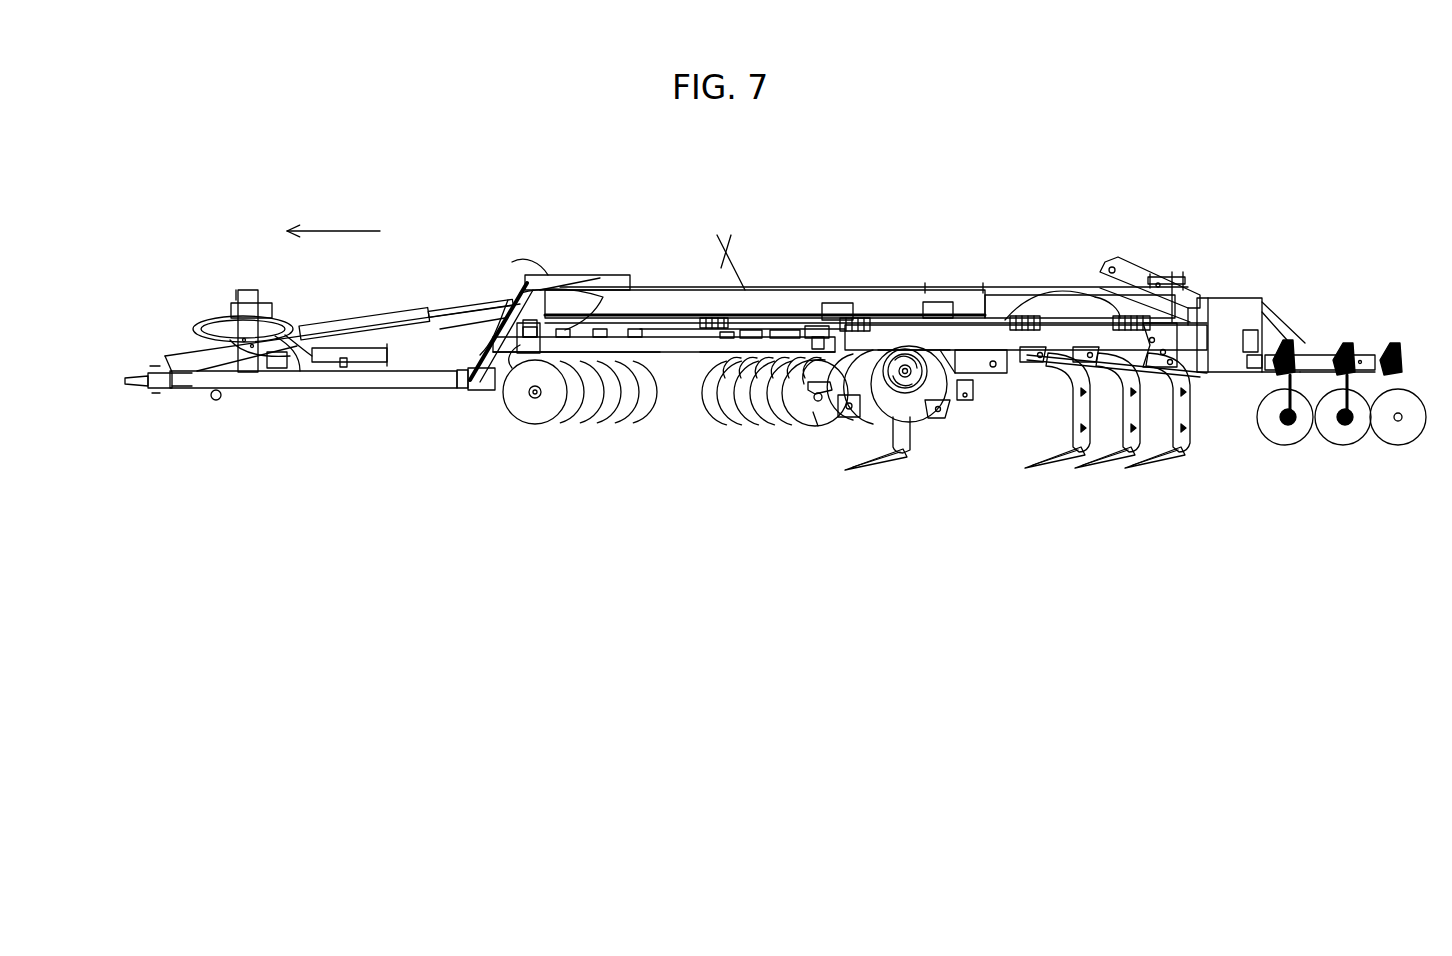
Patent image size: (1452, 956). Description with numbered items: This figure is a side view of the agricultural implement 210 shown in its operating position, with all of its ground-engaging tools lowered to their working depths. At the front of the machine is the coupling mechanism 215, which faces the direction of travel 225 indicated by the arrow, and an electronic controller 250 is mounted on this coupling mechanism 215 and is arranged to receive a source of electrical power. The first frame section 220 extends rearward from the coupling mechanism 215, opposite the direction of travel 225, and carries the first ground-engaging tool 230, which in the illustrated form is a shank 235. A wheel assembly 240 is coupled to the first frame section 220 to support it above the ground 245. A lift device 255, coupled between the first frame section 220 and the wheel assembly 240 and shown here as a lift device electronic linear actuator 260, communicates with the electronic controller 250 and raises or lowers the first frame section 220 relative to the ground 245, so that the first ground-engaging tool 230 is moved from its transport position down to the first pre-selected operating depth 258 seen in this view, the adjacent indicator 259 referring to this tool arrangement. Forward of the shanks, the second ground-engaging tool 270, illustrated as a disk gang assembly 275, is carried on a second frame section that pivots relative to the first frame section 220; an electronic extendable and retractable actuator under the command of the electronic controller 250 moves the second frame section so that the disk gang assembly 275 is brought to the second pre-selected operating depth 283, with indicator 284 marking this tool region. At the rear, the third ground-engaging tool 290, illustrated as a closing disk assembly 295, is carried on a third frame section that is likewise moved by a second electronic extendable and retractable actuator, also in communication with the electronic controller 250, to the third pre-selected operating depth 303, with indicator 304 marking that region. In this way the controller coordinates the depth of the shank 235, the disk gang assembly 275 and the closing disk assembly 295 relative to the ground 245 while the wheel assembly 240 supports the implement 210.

The agricultural implement 210 is at (1047, 153).
The coupling mechanism 215 is at (318, 386).
The first frame section 220 is at (660, 298).
The direction of travel 225 is at (338, 231).
The first ground-engaging tool 230 is at (877, 320).
The shank 235 is at (885, 463).
The wheel assembly 240 is at (855, 400).
The ground 245 is at (540, 535).
The electronic controller 250 is at (267, 303).
The lift device 255 is at (955, 403).
The first pre-selected operating depth 258 is at (1170, 490).
The front shank section 259 is at (957, 527).
The lift device electronic linear actuator 260 is at (927, 403).
The second ground-engaging tool 270 is at (543, 310).
The disk gang assembly 275 is at (520, 413).
The second pre-selected operating depth 283 is at (610, 505).
The second disc gang row 284 is at (660, 517).
The third ground-engaging tool 290 is at (1397, 347).
The closing disk assembly 295 is at (1385, 433).
The third pre-selected operating depth 303 is at (1285, 495).
The rear closing section 304 is at (1375, 533).